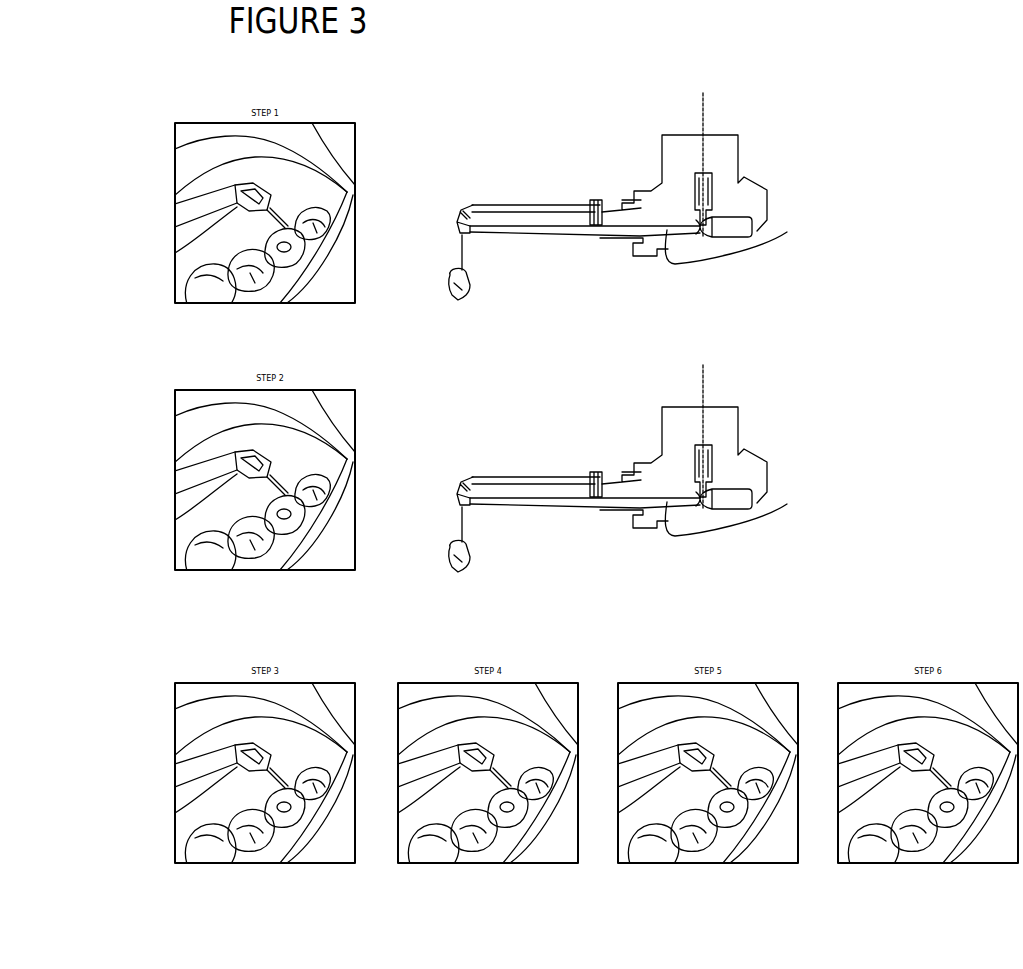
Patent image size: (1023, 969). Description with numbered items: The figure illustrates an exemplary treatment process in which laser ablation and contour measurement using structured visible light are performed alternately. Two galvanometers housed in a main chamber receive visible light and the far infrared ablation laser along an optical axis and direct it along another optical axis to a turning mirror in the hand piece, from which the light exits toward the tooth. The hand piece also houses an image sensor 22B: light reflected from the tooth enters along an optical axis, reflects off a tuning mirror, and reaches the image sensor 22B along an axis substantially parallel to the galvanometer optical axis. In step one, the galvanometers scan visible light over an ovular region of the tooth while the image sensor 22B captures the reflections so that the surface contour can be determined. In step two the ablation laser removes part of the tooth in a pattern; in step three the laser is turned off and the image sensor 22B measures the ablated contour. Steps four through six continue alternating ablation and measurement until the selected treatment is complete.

The image sensor 22B is at (610, 210).